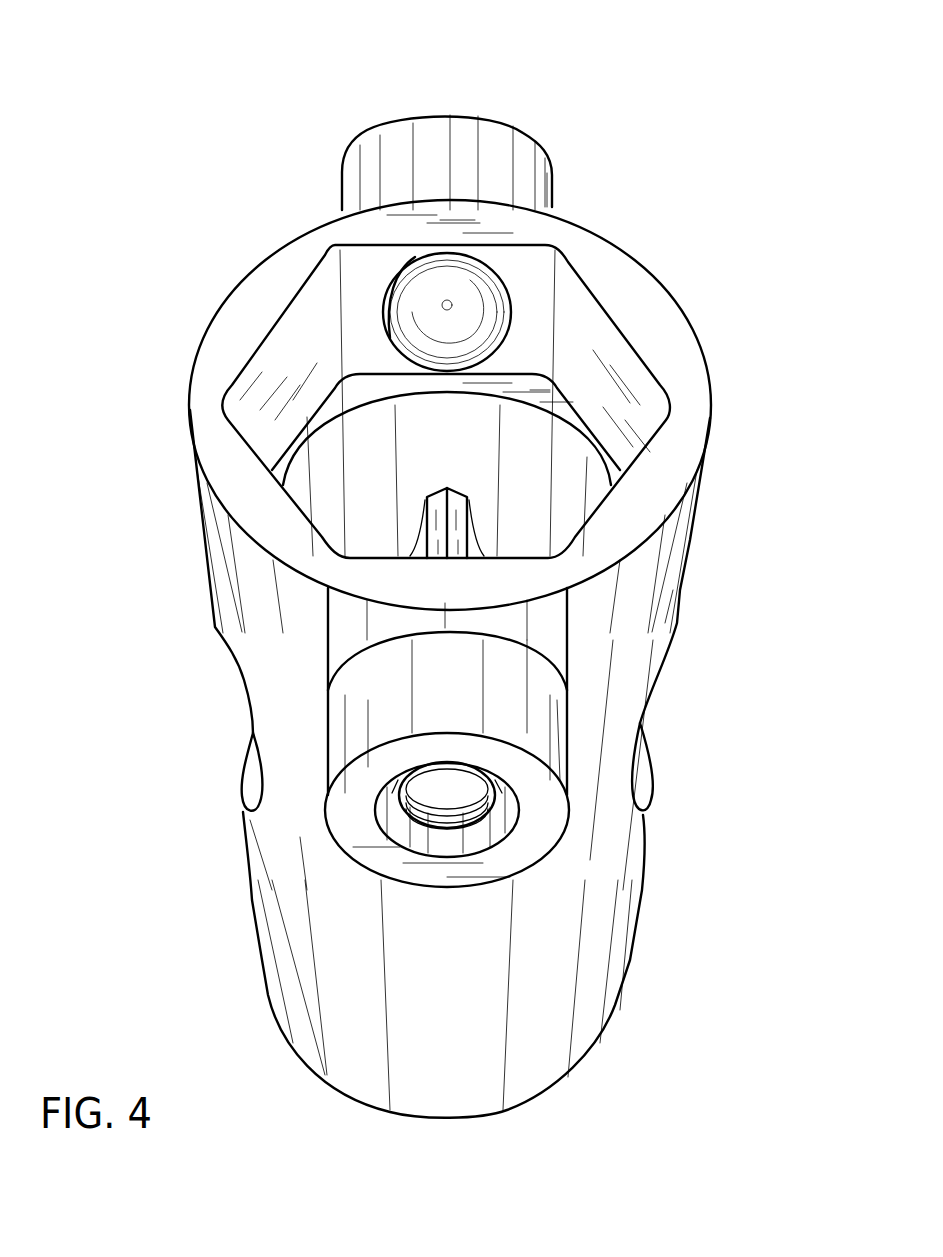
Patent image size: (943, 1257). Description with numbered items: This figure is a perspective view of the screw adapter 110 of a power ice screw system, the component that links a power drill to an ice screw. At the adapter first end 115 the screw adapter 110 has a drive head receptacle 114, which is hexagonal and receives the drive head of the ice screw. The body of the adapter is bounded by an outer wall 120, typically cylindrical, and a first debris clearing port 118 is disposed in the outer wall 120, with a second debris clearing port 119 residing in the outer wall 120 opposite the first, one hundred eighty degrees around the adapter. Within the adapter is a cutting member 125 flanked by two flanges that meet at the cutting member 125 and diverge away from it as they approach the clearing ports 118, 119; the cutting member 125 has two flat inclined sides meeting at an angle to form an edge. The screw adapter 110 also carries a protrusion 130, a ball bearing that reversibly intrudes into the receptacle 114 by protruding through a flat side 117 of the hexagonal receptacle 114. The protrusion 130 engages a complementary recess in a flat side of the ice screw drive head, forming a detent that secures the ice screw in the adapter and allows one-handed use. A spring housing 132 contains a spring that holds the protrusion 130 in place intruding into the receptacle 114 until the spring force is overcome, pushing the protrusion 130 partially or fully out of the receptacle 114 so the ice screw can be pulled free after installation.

The screw adapter 110 is at (143, 73).
The drive head receptacle 114 is at (308, 332).
The adapter first end 115 is at (693, 468).
The flat side 117 is at (363, 263).
The first debris clearing port 118 is at (235, 702).
The second debris clearing port 119 is at (657, 702).
The outer wall 120 is at (477, 992).
The cutting member 125 is at (458, 490).
The protrusion 130 is at (497, 283).
The spring housing 132 is at (528, 137).